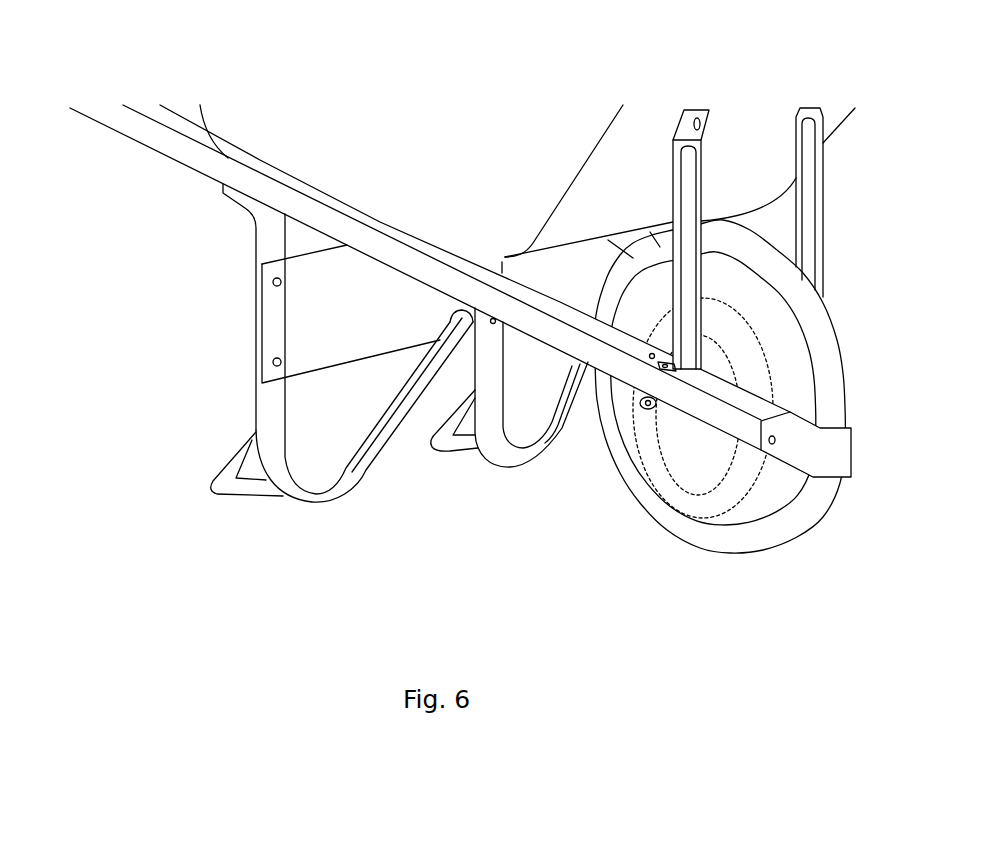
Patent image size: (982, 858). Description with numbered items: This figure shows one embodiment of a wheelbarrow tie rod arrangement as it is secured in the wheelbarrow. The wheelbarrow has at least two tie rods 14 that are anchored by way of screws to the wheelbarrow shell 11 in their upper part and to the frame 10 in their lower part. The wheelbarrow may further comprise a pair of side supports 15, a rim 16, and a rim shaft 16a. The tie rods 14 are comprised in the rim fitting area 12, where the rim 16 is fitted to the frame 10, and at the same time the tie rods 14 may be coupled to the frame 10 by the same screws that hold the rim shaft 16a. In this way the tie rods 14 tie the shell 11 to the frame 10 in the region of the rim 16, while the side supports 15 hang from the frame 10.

The frame 10 is at (400, 260).
The wheelbarrow shell 11 is at (583, 165).
The rim fitting area 12 is at (647, 369).
The tie rods 14 is at (803, 102).
The side supports 15 is at (343, 494).
The rim 16 is at (645, 510).
The rim shaft 16a is at (645, 417).